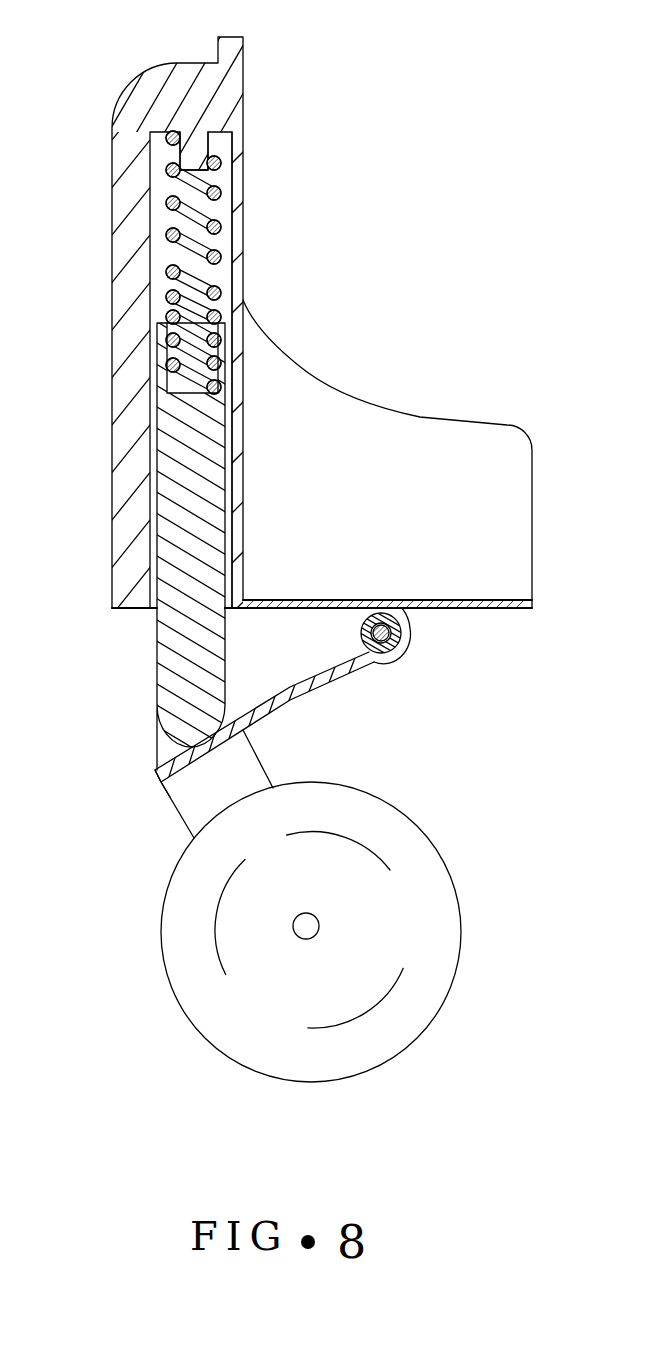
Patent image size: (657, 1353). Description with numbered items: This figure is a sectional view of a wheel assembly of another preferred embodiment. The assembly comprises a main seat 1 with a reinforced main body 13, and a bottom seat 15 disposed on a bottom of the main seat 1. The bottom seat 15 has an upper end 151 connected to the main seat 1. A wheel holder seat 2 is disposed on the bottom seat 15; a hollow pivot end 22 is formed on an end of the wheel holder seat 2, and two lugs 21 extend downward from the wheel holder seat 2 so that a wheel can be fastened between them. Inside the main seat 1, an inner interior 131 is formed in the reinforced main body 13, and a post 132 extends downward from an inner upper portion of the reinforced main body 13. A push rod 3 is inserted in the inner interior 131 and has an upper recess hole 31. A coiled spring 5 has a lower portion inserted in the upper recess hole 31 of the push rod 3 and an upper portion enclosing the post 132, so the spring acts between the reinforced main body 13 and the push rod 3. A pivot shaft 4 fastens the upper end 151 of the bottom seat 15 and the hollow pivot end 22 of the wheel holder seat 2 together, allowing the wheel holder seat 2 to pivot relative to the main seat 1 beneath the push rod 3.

The main seat 1 is at (380, 427).
The wheel holder seat 2 is at (163, 787).
The push rod 3 is at (165, 667).
The pivot shaft 4 is at (403, 633).
The coiled spring 5 is at (185, 243).
The reinforced main body 13 is at (120, 582).
The bottom seat 15 is at (355, 673).
The lugs 21 is at (257, 773).
The hollow pivot end 22 is at (355, 632).
The upper recess hole 31 is at (177, 383).
The inner interior 131 is at (223, 180).
The post 132 is at (188, 153).
The upper end 151 is at (410, 640).